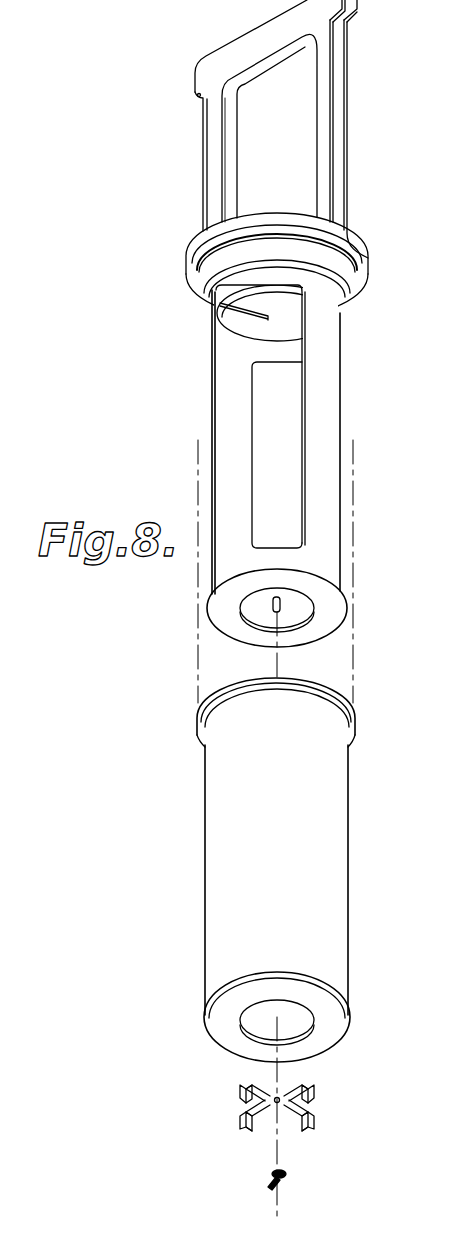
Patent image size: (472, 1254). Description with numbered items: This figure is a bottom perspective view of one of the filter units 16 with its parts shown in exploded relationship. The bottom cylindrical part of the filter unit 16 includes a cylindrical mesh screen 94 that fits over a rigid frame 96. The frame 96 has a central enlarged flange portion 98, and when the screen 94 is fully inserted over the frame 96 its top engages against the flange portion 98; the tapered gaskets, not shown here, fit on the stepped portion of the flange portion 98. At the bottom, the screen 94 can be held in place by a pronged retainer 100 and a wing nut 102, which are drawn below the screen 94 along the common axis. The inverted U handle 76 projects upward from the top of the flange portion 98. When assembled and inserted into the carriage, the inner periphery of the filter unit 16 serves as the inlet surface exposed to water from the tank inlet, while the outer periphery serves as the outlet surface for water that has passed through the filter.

The filter unit 16 is at (187, 844).
The inverted U handle 76 is at (343, 100).
The cylindrical mesh screen 94 is at (345, 858).
The rigid frame 96 is at (335, 417).
The flange portion 98 is at (358, 262).
The pronged retainer 100 is at (243, 1113).
The wing nut 102 is at (267, 1173).